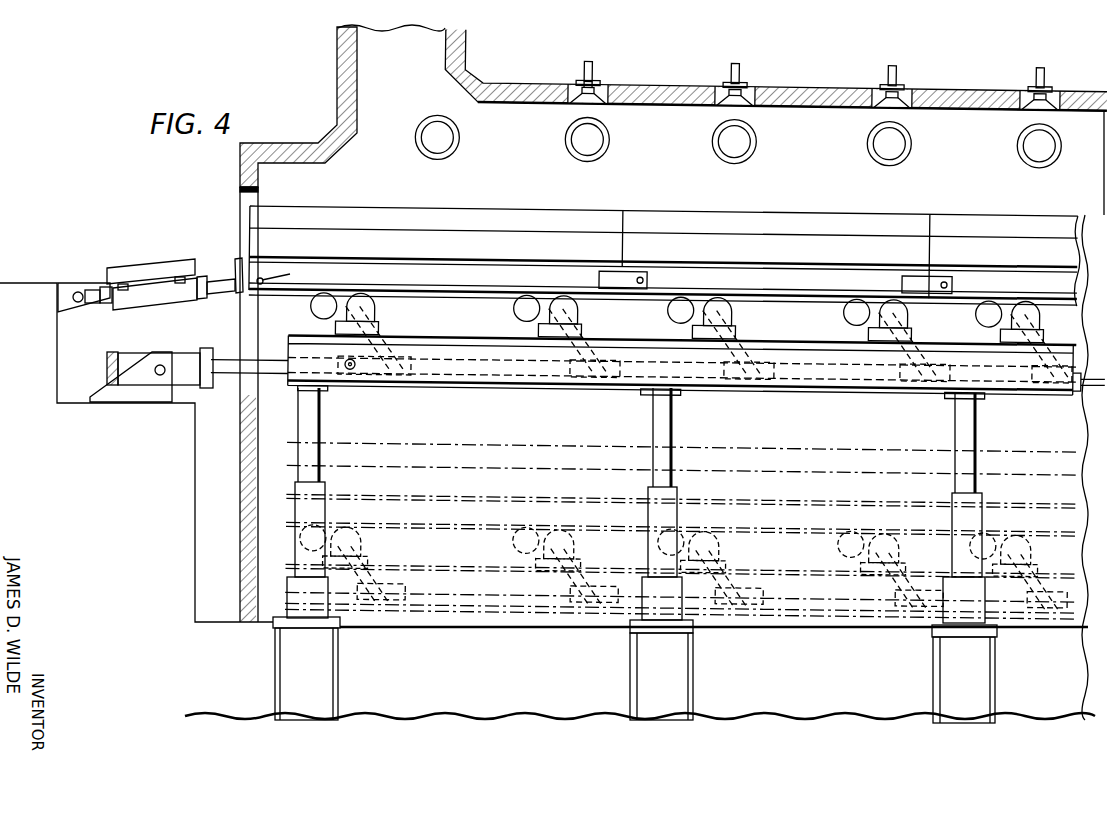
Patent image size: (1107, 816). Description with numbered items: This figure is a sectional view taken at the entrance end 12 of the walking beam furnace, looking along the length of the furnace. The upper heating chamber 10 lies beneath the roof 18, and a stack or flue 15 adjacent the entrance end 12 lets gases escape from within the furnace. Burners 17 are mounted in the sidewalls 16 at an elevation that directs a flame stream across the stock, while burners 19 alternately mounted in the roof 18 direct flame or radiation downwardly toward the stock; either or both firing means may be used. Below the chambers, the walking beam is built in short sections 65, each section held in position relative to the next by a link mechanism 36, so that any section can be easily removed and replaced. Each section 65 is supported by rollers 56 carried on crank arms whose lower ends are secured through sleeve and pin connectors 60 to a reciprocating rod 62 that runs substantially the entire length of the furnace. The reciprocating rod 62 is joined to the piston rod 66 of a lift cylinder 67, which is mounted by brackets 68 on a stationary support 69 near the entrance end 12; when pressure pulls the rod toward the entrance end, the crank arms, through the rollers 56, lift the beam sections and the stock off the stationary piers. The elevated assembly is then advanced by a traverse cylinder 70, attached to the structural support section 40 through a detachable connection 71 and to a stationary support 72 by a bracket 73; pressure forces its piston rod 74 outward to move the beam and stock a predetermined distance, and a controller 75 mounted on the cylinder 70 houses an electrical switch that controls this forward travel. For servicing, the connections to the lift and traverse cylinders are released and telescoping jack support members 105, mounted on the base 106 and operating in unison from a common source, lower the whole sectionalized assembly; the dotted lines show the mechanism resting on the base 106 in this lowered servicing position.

The upper heating chamber 10 is at (683, 128).
The entrance end 12 is at (233, 191).
The stack or flue 15 is at (467, 44).
The sidewalls 16 is at (825, 177).
The burners 17 is at (461, 139).
The roof 18 is at (803, 83).
The burners 19 is at (589, 60).
The link mechanism 36 is at (650, 275).
The structural support section 40 is at (420, 285).
The rollers 56 is at (312, 306).
The sleeve and pin connector 60 is at (412, 372).
The reciprocating rod 62 is at (507, 372).
The section 65 is at (505, 255).
The piston rod 66 is at (255, 364).
The lift cylinder 67 is at (147, 356).
The bracket 68 is at (147, 398).
The stationary support 69 is at (146, 454).
The traverse cylinder 70 is at (124, 298).
The detachable connection 71 is at (264, 282).
The stationary support 72 is at (34, 282).
The bracket 73 is at (68, 290).
The piston rod 74 is at (224, 293).
The controller 75 is at (136, 268).
The support members 105 is at (318, 421).
The base 106 is at (771, 683).